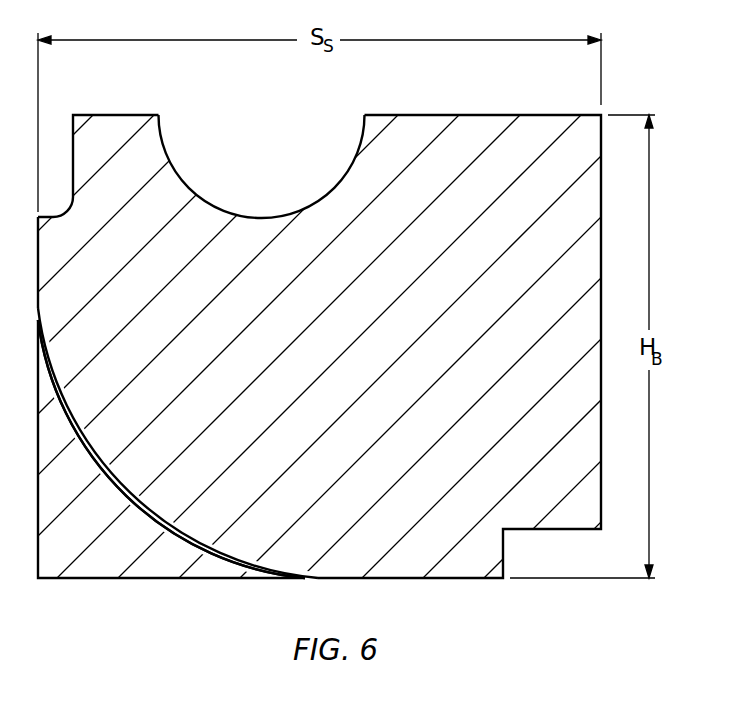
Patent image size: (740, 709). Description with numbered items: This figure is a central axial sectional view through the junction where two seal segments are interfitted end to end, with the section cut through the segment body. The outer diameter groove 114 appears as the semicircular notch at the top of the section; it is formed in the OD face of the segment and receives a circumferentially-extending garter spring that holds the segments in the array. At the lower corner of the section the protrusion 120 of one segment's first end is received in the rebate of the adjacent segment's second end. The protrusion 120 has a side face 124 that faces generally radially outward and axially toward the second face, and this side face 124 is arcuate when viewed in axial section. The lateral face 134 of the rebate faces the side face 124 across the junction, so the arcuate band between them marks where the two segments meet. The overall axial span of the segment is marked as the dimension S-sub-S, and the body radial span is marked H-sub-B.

The outer diameter groove 114 is at (284, 149).
The protrusion 120 is at (182, 548).
The side face 124 is at (287, 492).
The lateral face 134 is at (267, 456).